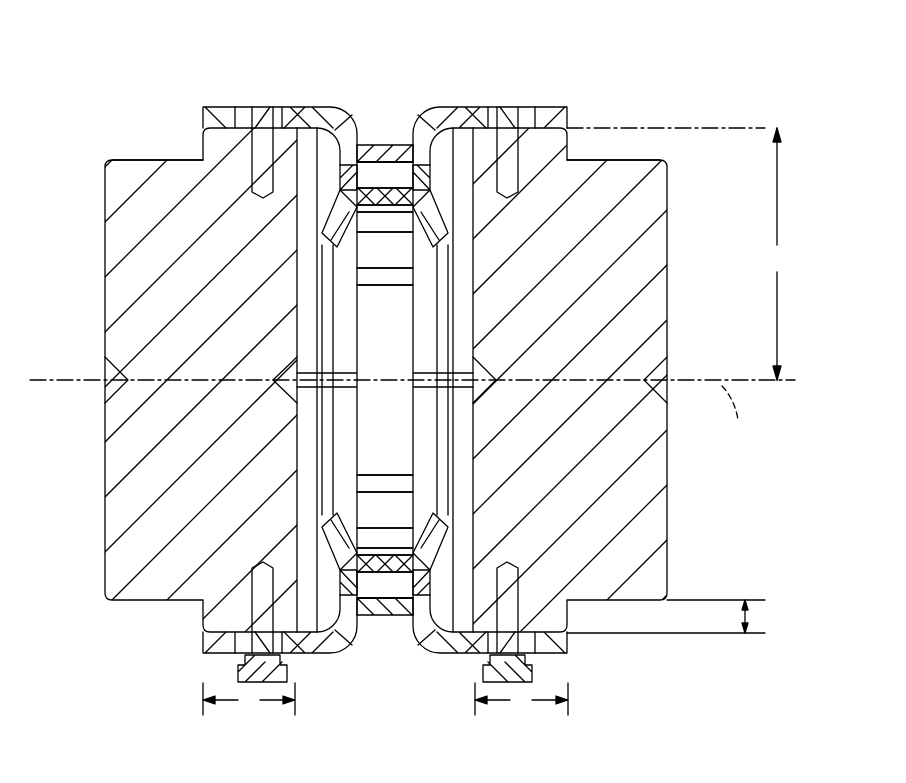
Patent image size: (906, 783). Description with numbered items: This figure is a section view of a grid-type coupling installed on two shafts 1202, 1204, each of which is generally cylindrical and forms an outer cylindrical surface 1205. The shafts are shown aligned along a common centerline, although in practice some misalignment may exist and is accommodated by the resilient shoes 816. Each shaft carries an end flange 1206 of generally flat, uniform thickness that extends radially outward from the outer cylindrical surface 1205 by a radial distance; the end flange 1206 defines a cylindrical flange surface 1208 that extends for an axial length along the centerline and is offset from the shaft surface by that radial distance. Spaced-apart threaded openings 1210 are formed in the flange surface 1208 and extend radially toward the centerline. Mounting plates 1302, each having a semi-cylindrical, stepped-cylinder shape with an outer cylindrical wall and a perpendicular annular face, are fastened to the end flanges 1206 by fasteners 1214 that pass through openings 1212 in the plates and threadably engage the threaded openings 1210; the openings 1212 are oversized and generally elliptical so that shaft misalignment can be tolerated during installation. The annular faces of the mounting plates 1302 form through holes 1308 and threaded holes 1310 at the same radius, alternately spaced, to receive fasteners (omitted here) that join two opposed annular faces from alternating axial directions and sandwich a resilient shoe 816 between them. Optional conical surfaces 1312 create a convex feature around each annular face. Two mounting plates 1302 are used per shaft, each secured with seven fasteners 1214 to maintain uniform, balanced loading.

The mounting plate 1302 is at (522, 84).
The shaft 1202 is at (118, 462).
The shaft 1204 is at (650, 465).
The outer cylindrical surface 1205 is at (152, 160).
The end flange 1206 is at (228, 140).
The flange surface 1208 is at (207, 642).
The threaded opening 1210 is at (267, 140).
The opening 1212 is at (256, 112).
The fastener 1214 is at (280, 672).
The resilient shoe 816 is at (377, 150).
The through hole 1308 is at (428, 188).
The threaded hole 1310 is at (352, 183).
The conical surface 1312 is at (425, 518).